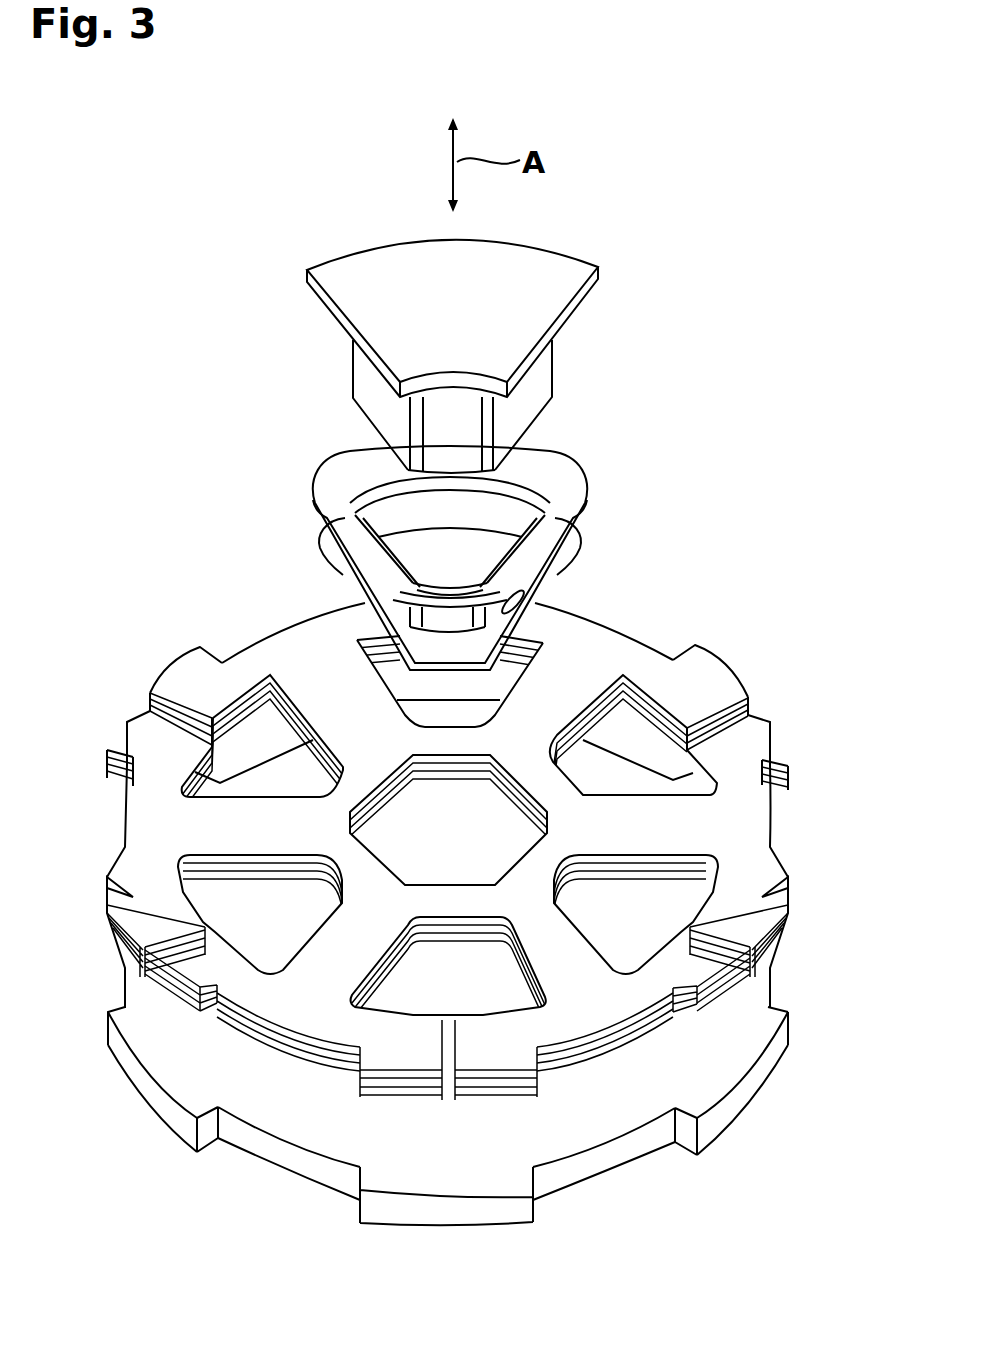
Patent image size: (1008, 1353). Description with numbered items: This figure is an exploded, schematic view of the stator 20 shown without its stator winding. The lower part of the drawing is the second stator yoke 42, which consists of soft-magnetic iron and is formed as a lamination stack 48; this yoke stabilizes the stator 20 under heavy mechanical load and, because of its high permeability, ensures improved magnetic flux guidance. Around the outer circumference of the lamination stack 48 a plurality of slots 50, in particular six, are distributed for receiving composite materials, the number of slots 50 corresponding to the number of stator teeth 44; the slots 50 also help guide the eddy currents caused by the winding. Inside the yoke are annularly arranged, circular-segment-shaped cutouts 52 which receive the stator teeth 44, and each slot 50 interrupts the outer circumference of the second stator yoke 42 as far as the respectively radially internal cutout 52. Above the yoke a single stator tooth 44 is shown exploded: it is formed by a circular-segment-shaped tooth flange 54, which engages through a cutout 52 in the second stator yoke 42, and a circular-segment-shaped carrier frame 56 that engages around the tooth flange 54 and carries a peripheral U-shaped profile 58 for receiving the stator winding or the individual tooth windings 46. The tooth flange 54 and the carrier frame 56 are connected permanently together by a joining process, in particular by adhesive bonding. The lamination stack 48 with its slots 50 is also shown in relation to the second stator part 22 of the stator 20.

The stator 20 is at (178, 438).
The second stator part 22 is at (502, 1116).
The second stator yoke 42 is at (448, 927).
The stator tooth 44 is at (584, 352).
The individual tooth winding 46 is at (755, 1092).
The lamination stack 48 is at (650, 642).
The slot 50 is at (178, 705).
The cutout 52 is at (396, 682).
The tooth flange 54 is at (372, 265).
The carrier frame 56 is at (567, 477).
The U-shaped profile 58 is at (567, 540).